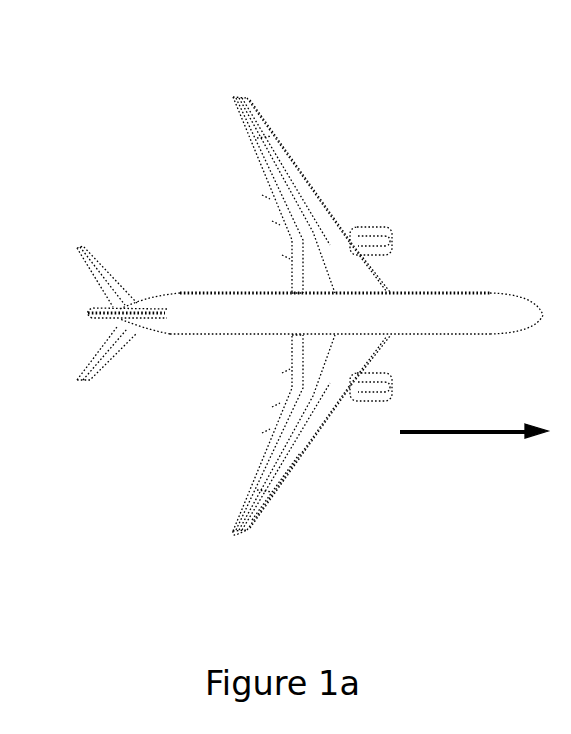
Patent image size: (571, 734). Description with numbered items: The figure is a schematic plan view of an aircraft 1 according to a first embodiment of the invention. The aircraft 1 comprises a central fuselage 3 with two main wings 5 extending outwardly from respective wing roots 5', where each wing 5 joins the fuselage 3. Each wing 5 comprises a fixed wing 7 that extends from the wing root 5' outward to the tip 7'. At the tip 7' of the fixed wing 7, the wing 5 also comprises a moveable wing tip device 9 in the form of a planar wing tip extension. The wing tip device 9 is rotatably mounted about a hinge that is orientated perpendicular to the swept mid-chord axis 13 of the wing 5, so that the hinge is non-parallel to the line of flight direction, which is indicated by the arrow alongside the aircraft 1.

The aircraft 1 is at (312, 320).
The central fuselage 3 is at (247, 312).
The main wing 5 is at (328, 320).
The wing root 5' is at (413, 257).
The fixed wing 7 is at (340, 433).
The tip 7' is at (320, 509).
The moveable wing tip device 9 is at (247, 517).
The swept mid-chord axis 13 is at (313, 230).